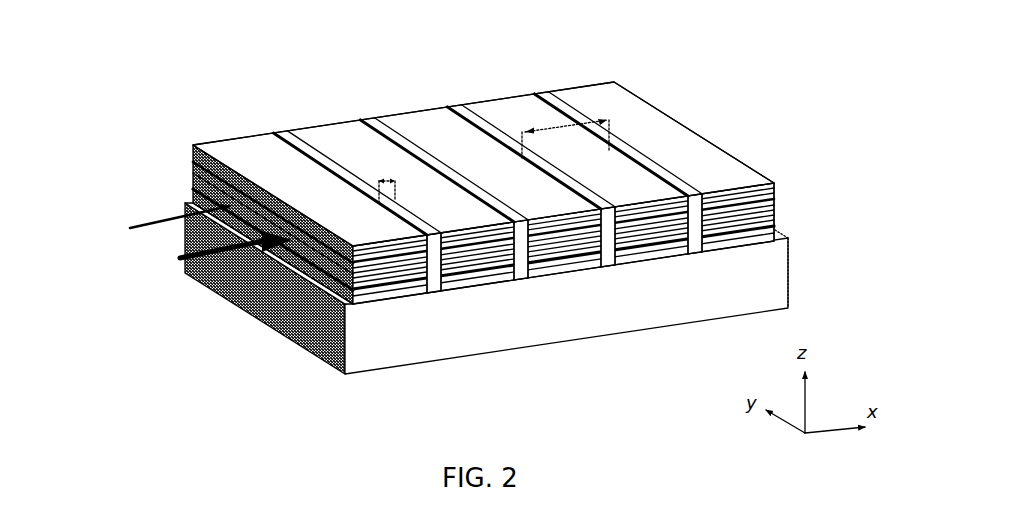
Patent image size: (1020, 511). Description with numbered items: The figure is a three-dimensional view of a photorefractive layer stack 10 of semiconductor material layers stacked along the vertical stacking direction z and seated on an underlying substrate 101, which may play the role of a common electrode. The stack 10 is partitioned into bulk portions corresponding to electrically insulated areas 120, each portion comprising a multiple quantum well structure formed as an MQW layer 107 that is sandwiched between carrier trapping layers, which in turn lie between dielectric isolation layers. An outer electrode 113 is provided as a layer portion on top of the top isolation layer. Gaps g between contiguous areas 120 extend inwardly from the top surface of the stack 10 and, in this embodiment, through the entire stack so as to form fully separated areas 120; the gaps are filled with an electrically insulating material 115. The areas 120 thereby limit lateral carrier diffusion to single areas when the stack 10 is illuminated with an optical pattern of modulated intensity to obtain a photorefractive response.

The photorefractive layer stack 10 is at (499, 214).
The substrate 101 is at (776, 290).
The multiple quantum well layer 107 is at (553, 245).
The outer electrode 113 is at (437, 142).
The electrically insulating material 115 is at (657, 173).
The electrically insulated areas 120 is at (478, 155).